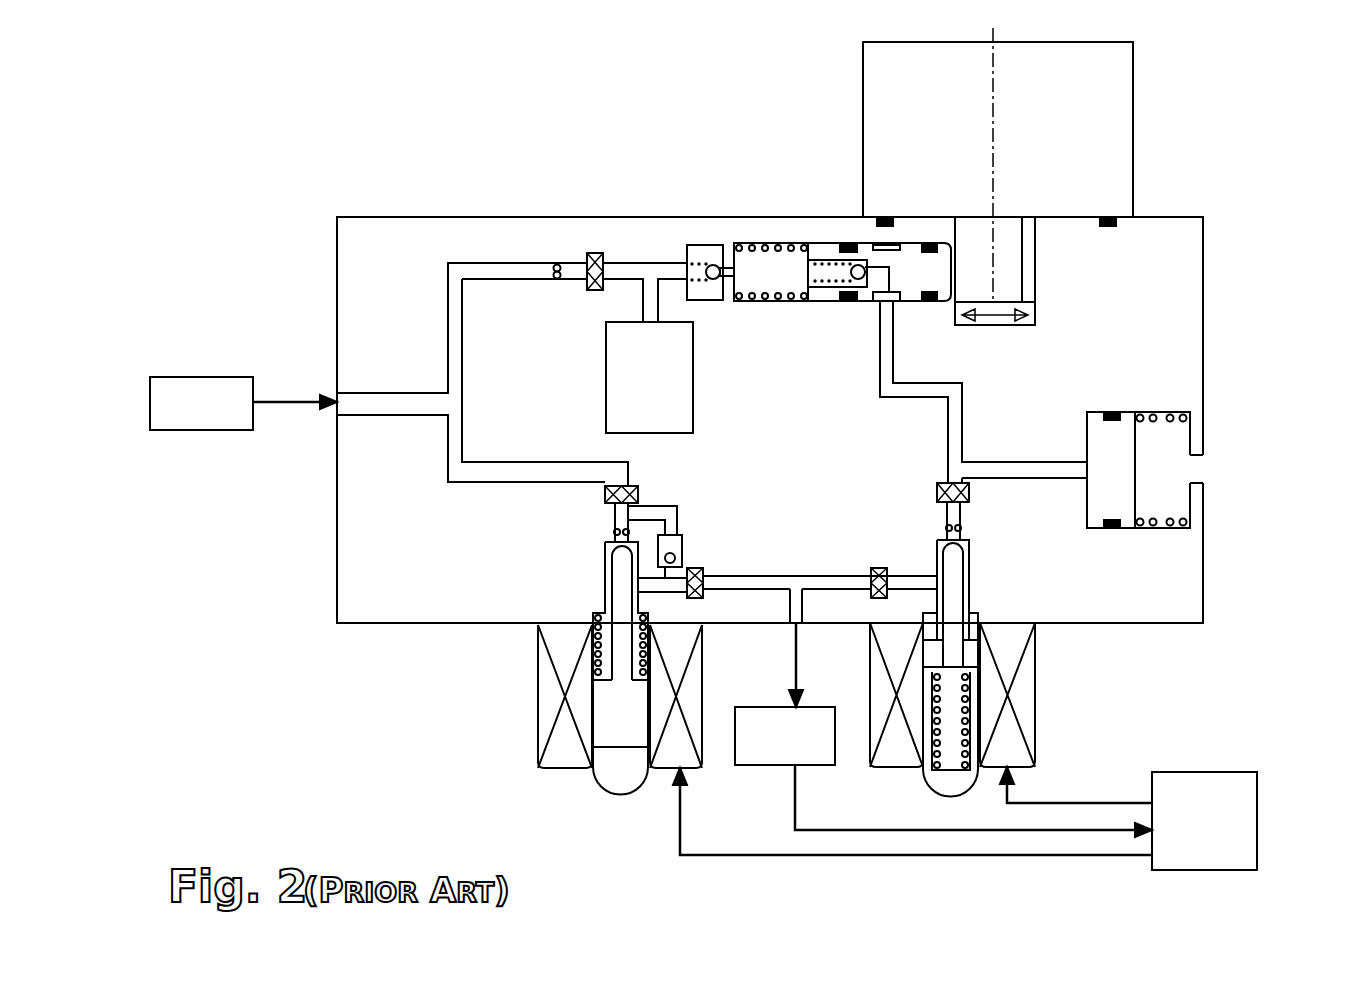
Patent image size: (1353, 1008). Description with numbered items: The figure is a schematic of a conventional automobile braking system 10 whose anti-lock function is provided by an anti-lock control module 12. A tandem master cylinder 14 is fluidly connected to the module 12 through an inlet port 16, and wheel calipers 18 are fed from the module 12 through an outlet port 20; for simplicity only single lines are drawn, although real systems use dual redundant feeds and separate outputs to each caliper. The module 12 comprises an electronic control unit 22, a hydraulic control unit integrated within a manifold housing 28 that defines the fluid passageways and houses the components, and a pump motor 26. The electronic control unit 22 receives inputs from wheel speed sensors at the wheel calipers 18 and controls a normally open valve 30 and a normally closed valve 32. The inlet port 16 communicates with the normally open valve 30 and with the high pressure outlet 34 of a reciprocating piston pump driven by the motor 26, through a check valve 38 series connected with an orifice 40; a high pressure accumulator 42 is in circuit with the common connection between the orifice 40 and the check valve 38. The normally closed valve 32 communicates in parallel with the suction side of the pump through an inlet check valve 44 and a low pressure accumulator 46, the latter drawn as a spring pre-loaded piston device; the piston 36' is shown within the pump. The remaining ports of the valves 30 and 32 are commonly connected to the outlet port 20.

The automobile braking system 10 is at (409, 162).
The anti-lock control module 12 is at (392, 585).
The tandem master cylinder 14 is at (198, 415).
The inlet port 16 is at (335, 392).
The wheel caliper 18 is at (785, 747).
The outlet port 20 is at (802, 628).
The electronic control unit 22 is at (1247, 820).
The pump motor 26 is at (1113, 108).
The manifold housing 28 is at (1177, 285).
The normally open valve 30 is at (548, 695).
The normally closed valve 32 is at (1023, 697).
The high pressure outlet 34 is at (668, 272).
The valve piston 36' is at (839, 214).
The check valve 38 is at (707, 252).
The orifice 40 is at (553, 263).
The high pressure accumulator 42 is at (678, 407).
The inlet check valve 44 is at (865, 282).
The low pressure accumulator 46 is at (1173, 447).